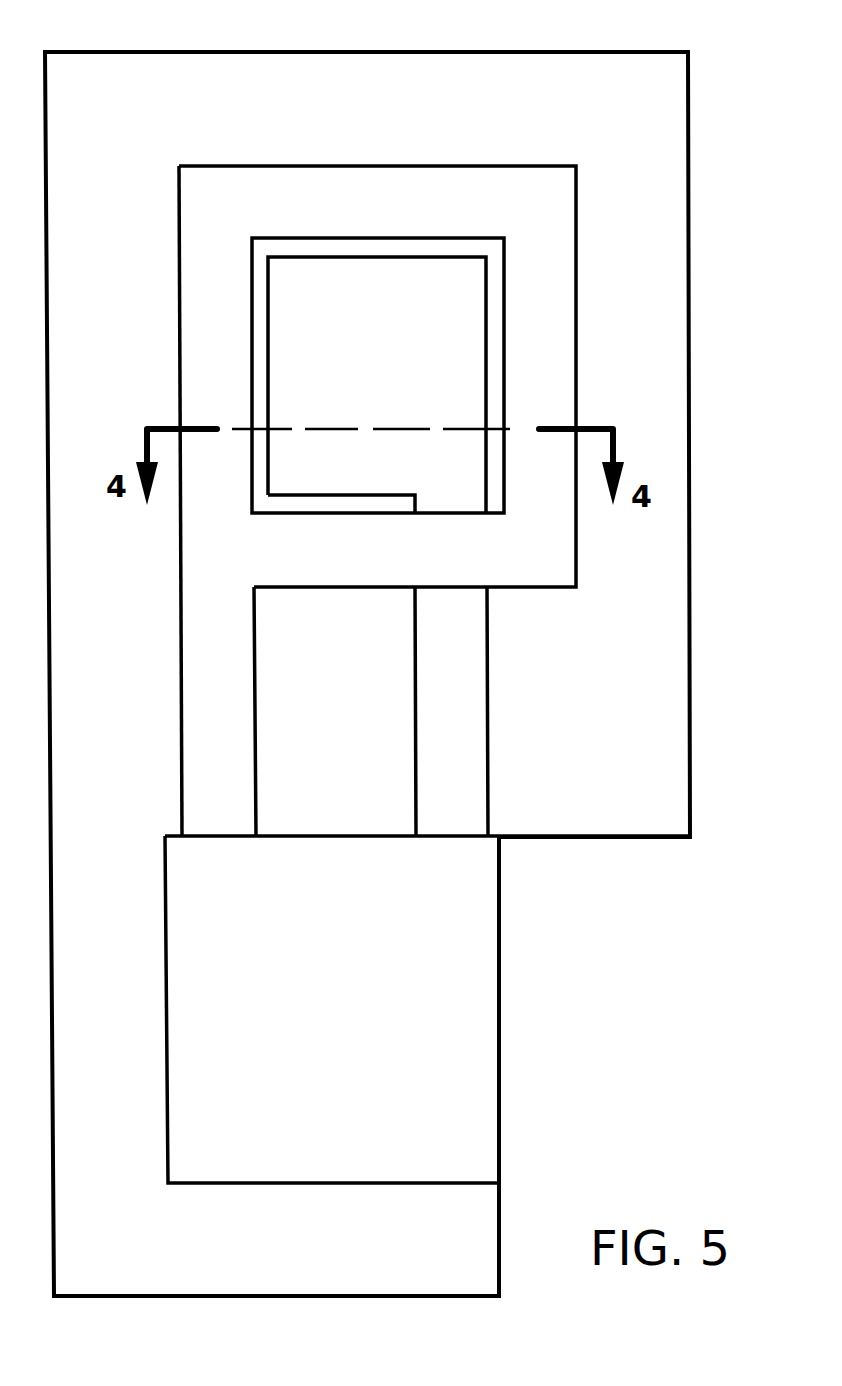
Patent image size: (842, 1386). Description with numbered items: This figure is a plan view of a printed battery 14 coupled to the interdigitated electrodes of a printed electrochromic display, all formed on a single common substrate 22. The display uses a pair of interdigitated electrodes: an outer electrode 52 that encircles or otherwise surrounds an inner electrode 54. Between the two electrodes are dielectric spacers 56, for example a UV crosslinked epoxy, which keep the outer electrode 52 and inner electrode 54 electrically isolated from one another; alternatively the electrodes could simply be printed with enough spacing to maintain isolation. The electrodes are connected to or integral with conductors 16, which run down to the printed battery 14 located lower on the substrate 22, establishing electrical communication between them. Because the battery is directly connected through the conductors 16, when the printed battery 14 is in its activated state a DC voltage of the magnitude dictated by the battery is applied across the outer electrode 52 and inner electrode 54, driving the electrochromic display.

The printed battery 14 is at (197, 957).
The conductors 16 is at (203, 686).
The substrate 22 is at (585, 75).
The outer electrode 52 is at (272, 195).
The inner electrode 54 is at (383, 351).
The dielectric spacers 56 is at (262, 308).